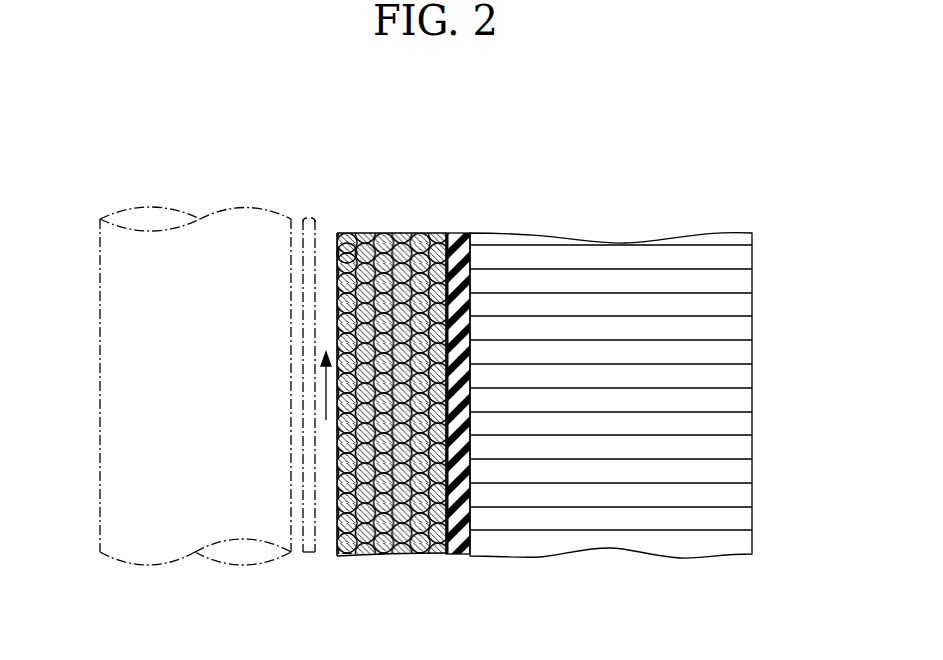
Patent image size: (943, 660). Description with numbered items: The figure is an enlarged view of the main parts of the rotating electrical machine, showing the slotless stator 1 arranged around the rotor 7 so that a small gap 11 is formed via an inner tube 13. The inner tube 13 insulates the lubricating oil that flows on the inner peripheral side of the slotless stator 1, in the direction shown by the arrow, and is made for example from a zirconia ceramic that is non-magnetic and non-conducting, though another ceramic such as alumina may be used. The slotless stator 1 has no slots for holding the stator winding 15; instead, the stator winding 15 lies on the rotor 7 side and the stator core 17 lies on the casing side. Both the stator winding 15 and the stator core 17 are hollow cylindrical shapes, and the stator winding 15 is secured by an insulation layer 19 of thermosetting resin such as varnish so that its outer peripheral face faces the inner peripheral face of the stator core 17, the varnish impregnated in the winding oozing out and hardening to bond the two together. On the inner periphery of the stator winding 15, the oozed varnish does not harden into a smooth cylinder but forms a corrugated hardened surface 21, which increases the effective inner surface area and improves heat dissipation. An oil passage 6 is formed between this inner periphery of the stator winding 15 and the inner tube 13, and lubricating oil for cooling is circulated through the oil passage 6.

The slotless stator 1 is at (536, 370).
The oil passage 6 is at (325, 538).
The rotor 7 is at (213, 232).
The gap 11 is at (293, 238).
The inner tube 13 is at (308, 553).
The stator winding 15 is at (402, 243).
The stator core 17 is at (611, 363).
The insulation layer 19 is at (450, 555).
The corrugated hardened surface 21 is at (337, 253).